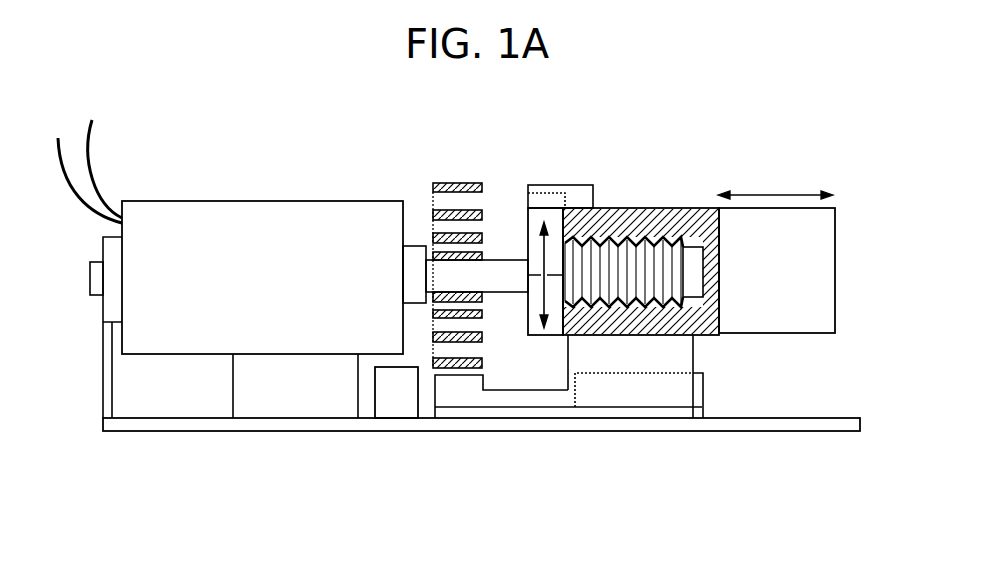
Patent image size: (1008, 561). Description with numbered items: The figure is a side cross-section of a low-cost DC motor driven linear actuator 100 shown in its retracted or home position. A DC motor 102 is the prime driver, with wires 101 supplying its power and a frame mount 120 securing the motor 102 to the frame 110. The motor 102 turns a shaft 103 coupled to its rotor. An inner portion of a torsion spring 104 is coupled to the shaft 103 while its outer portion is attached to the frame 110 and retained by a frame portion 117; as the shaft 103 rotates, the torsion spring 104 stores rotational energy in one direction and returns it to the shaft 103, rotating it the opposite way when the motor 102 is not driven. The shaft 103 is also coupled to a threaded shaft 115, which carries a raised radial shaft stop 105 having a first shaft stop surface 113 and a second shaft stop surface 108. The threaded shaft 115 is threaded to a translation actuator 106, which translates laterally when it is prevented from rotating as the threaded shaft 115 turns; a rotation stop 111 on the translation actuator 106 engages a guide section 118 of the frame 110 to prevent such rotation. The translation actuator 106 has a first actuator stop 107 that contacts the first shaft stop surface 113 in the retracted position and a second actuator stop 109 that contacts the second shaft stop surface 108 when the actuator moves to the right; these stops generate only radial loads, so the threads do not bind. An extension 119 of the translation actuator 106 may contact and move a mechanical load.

The linear actuator 100 is at (723, 123).
The wires 101 is at (78, 122).
The DC motor 102 is at (248, 199).
The shaft 103 is at (505, 257).
The torsion spring 104 is at (458, 182).
The shaft stop 105 is at (543, 327).
The translation actuator 106 is at (645, 208).
The first actuator stop 107 is at (580, 185).
The second shaft stop surface 108 is at (537, 277).
The second actuator stop 109 is at (448, 392).
The frame 110 is at (152, 433).
The rotation stop 111 is at (692, 348).
The first shaft stop surface 113 is at (540, 202).
The threaded shaft 115 is at (693, 280).
The frame portion 117 is at (392, 397).
The guide section 118 is at (700, 393).
The extension 119 is at (802, 260).
The frame mount 120 is at (285, 392).